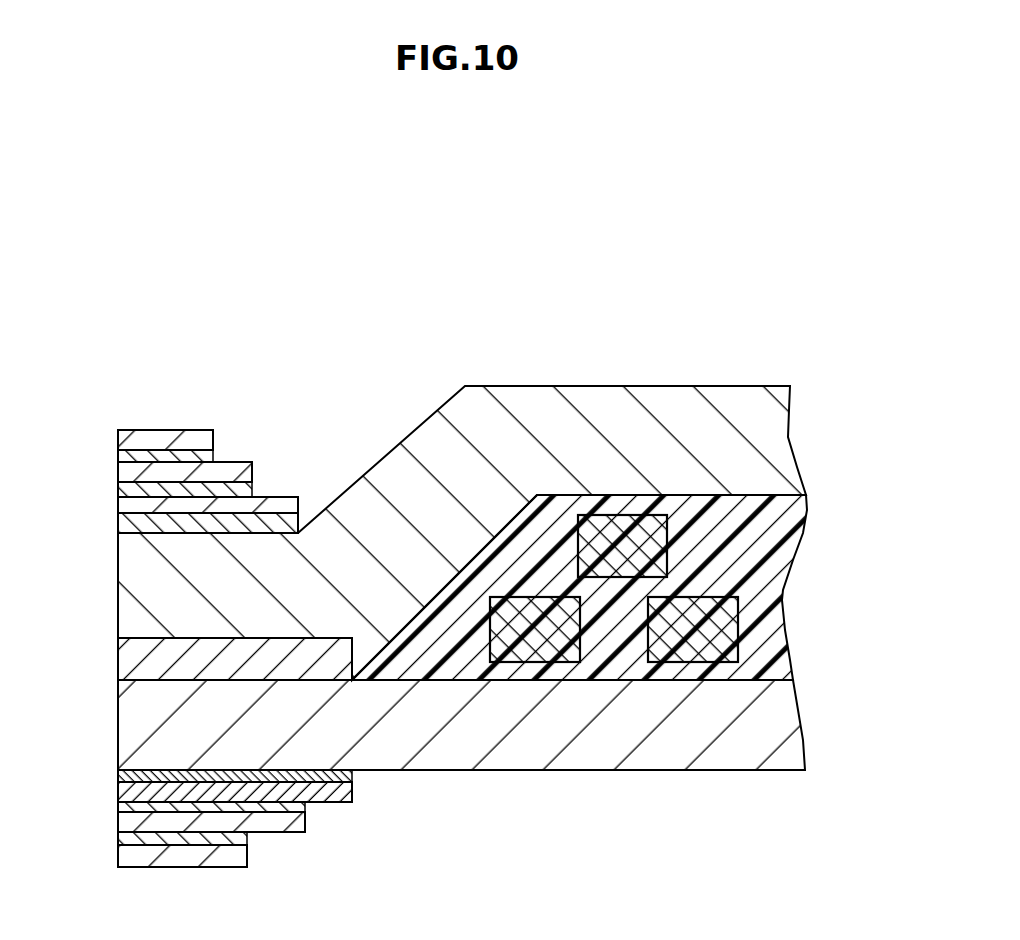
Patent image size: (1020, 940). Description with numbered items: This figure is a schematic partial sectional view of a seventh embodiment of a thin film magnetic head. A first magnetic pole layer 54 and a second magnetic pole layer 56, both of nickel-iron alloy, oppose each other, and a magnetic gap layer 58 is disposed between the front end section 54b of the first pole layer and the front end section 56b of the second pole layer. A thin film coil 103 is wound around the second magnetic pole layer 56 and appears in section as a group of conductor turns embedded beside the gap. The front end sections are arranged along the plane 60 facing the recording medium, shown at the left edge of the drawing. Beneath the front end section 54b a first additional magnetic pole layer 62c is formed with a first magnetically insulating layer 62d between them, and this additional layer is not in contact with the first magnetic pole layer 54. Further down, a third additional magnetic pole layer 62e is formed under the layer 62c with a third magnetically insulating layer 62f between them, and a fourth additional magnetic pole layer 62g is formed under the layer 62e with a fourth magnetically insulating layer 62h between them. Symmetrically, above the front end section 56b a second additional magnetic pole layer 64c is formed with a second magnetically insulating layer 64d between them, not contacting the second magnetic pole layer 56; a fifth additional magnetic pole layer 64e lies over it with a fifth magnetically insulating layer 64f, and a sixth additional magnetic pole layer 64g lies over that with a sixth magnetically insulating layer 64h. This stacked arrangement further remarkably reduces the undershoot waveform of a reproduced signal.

The first magnetic pole layer 54 is at (615, 770).
The front end section of the first magnetic pole layer 54b is at (118, 717).
The second magnetic pole layer 56 is at (612, 392).
The front end section of the second magnetic pole layer 56b is at (118, 588).
The magnetic gap layer 58 is at (118, 655).
The plane facing the recording medium 60 is at (126, 395).
The first additional magnetic pole layer 62c is at (118, 790).
The first magnetically insulating layer 62d is at (118, 772).
The third additional magnetic pole layer 62e is at (118, 820).
The third magnetically insulating layer 62f is at (305, 810).
The fourth additional magnetic pole layer 62g is at (118, 857).
The fourth magnetically insulating layer 62h is at (247, 845).
The second additional magnetic pole layer 64c is at (118, 505).
The second magnetically insulating layer 64d is at (118, 527).
The fifth additional magnetic pole layer 64e is at (118, 470).
The fifth magnetically insulating layer 64f is at (252, 490).
The sixth additional magnetic pole layer 64g is at (118, 438).
The sixth magnetically insulating layer 64h is at (213, 456).
The thin film coil 103 is at (775, 628).